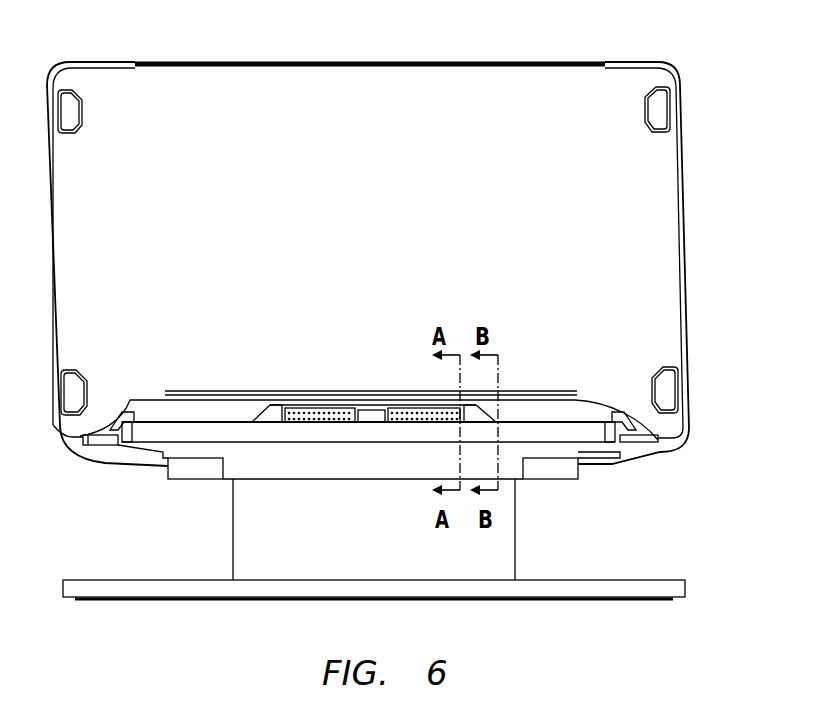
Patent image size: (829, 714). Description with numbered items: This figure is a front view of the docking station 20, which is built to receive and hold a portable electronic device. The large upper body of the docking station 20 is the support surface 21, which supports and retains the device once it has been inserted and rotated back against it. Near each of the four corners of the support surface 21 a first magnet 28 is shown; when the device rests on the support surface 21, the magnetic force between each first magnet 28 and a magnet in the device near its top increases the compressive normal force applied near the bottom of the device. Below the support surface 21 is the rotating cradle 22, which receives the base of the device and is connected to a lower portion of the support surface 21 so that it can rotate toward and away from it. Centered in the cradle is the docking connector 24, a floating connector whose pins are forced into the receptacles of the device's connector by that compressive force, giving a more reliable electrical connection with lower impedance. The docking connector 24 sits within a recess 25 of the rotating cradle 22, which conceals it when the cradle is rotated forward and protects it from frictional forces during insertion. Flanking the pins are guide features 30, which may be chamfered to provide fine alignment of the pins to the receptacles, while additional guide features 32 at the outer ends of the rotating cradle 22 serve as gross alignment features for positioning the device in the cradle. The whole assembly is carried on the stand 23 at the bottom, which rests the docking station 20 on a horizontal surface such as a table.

The docking station 20 is at (400, 235).
The support surface 21 is at (380, 228).
The rotating cradle 22 is at (103, 455).
The stand 23 is at (586, 610).
The docking connector 24 is at (297, 432).
The recess 25 is at (405, 432).
The first magnet 28 is at (83, 135).
The guide features 30 is at (270, 400).
The additional guide features 32 is at (125, 406).